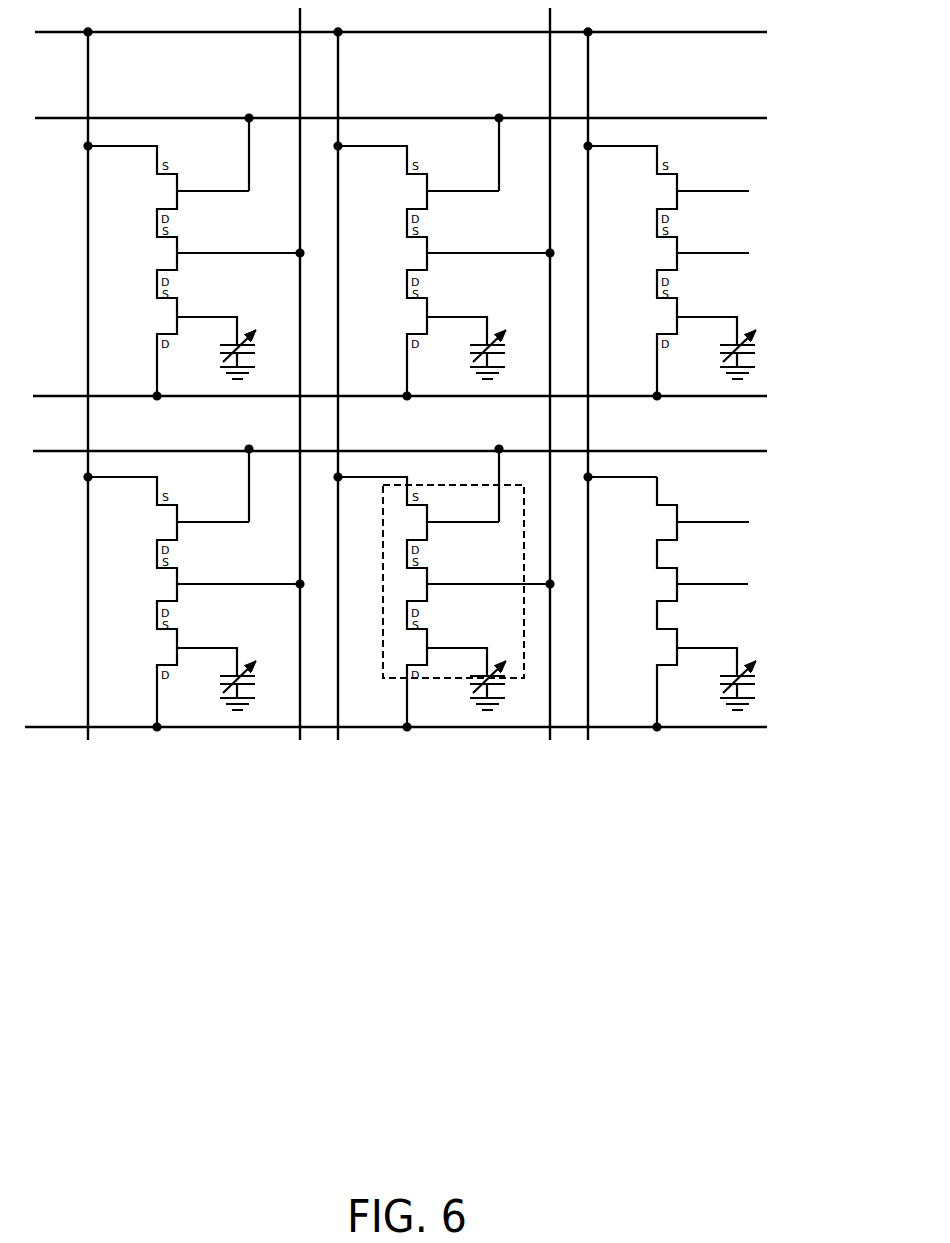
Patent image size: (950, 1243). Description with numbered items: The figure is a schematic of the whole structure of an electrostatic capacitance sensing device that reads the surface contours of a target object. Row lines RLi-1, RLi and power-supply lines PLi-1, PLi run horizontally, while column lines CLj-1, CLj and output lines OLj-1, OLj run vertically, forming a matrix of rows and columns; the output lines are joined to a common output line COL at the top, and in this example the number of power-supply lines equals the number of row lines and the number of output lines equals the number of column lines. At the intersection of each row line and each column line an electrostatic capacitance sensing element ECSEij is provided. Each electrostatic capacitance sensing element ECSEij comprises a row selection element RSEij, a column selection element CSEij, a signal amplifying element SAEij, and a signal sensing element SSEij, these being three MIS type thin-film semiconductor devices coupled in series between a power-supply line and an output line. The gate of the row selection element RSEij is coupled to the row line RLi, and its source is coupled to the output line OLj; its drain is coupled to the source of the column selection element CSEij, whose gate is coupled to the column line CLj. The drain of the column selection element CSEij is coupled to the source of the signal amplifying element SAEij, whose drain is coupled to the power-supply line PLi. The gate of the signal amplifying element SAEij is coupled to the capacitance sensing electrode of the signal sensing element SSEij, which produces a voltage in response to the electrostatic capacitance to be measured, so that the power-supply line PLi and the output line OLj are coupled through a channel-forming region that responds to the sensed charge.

The common output line COL is at (422, 22).
The row line RLi-1 is at (400, 82).
The row line RLi is at (398, 438).
The power-supply line PLi-1 is at (389, 353).
The power-supply line PLi is at (396, 714).
The column line CLj-1 is at (242, 374).
The column line CLj is at (527, 374).
The output line OLj-1 is at (82, 407).
The output line OLj is at (339, 402).
The electrostatic capacitance sensing element ECSEij is at (432, 685).
The row selection element RSEij is at (680, 512).
The column selection element CSEij is at (730, 567).
The signal amplifying element SAEij is at (730, 630).
The signal sensing element SSEij is at (760, 684).